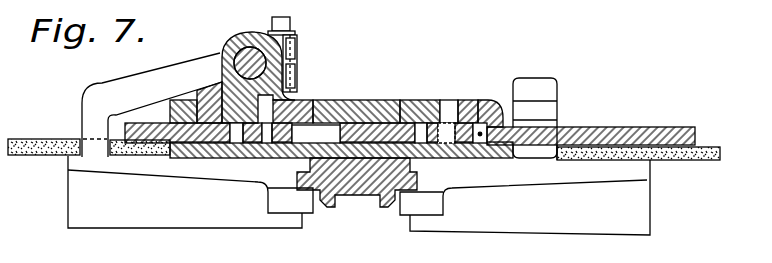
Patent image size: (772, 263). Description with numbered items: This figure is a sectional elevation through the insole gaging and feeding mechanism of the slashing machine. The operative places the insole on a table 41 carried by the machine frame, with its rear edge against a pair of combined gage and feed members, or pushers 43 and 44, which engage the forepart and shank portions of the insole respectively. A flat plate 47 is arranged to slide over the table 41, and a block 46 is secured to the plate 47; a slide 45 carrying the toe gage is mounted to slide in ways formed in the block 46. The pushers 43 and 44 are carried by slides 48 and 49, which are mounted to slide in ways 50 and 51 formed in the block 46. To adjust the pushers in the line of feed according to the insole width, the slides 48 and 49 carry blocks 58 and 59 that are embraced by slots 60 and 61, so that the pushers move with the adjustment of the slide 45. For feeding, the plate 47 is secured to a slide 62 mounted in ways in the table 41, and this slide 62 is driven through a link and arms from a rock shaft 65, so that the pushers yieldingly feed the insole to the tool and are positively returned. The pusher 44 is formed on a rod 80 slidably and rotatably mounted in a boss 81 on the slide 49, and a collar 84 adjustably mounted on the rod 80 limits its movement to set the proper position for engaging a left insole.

The table 41 is at (90, 171).
The pusher 43 is at (538, 85).
The pusher 44 is at (97, 104).
The slide 45 is at (595, 131).
The block 46 is at (403, 104).
The flat plate 47 is at (200, 153).
The slide 48 is at (464, 103).
The slide 49 is at (297, 103).
The way 50 is at (474, 108).
The way 51 is at (338, 100).
The block 58 is at (466, 143).
The block 59 is at (287, 143).
The slot 60 is at (481, 136).
The slot 61 is at (315, 134).
The slide 62 is at (380, 178).
The rock shaft 65 is at (306, 17).
The rod 80 is at (244, 52).
The boss 81 is at (229, 44).
The collar 84 is at (297, 48).